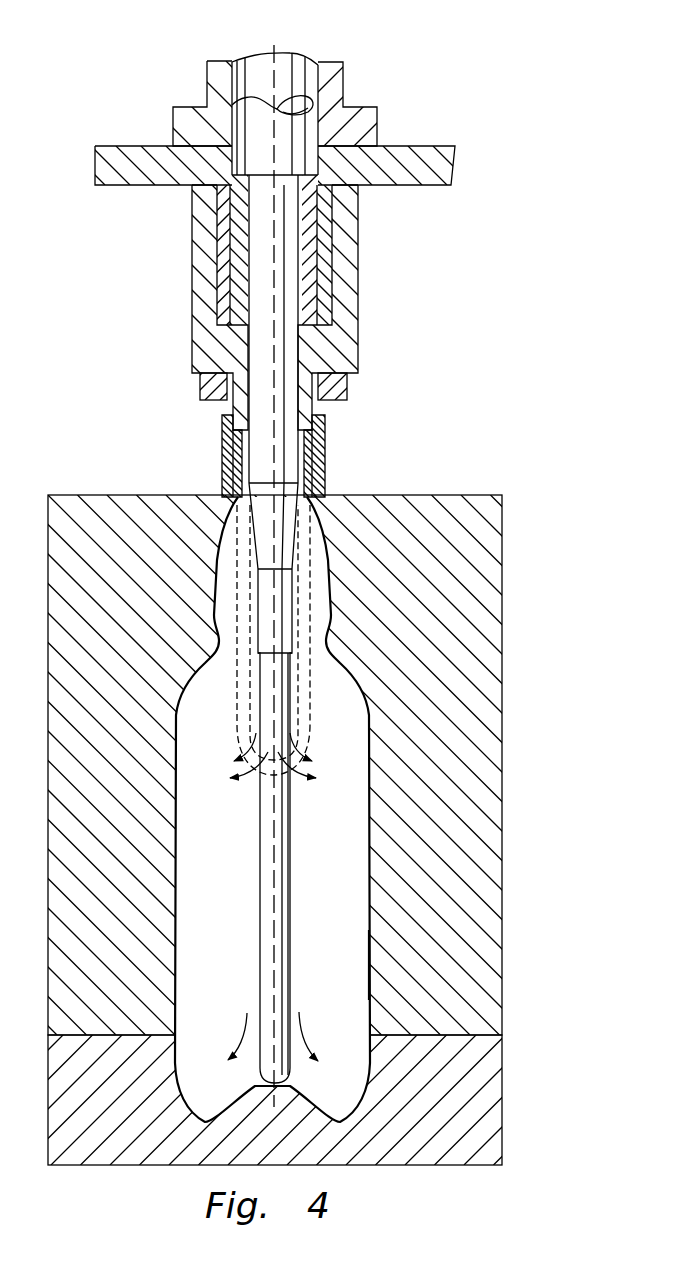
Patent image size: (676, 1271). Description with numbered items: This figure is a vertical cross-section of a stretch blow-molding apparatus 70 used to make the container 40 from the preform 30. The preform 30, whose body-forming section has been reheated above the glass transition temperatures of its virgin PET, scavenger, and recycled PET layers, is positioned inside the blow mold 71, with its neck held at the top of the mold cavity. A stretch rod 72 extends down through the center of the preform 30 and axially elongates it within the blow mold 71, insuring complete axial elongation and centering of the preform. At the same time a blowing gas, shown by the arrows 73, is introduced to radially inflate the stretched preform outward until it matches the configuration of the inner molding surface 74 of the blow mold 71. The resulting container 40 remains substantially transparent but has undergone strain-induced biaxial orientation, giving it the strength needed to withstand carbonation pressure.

The preform 30 is at (313, 589).
The container 40 is at (370, 867).
The stretch blow-molding apparatus 70 is at (459, 479).
The blow mold 71 is at (507, 598).
The stretch rod 72 is at (293, 864).
The blowing gas 73 is at (229, 740).
The inner molding surface 74 is at (372, 980).